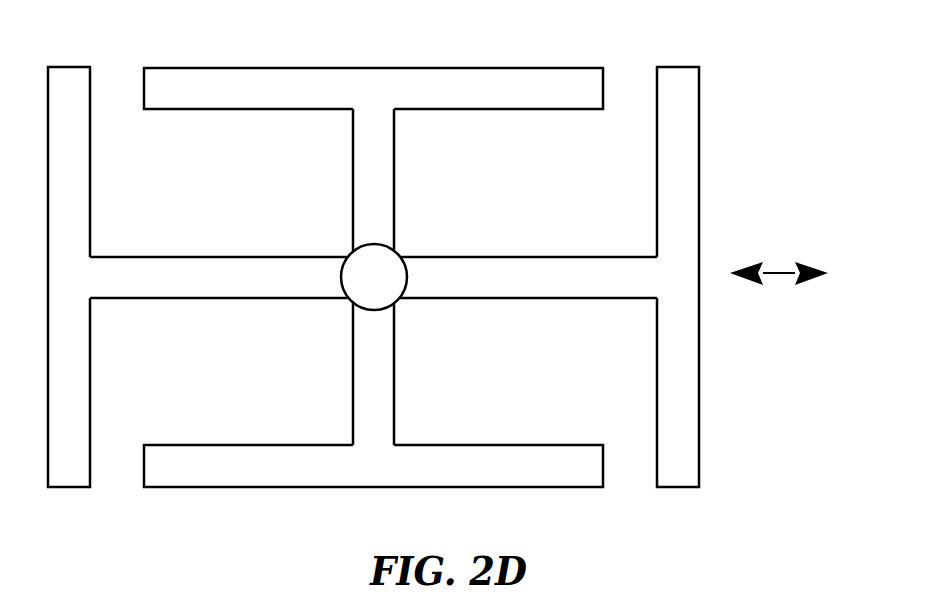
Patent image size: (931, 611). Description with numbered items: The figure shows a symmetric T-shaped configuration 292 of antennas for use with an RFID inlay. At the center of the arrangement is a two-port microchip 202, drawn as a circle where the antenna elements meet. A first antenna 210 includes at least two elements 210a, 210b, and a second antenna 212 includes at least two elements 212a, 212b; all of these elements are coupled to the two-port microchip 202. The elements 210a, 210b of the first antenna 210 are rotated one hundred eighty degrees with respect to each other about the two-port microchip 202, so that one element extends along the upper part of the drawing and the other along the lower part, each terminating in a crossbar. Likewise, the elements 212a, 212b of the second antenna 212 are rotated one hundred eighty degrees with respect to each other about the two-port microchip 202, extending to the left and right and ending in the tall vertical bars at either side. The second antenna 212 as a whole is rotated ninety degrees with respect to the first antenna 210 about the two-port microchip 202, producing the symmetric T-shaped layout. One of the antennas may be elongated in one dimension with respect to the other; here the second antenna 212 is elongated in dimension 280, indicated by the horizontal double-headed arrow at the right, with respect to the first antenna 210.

The symmetric T-shaped configuration 292 is at (146, 28).
The two-port microchip 202 is at (362, 285).
The first antenna 210 is at (236, 503).
The element of first antenna 210a is at (255, 455).
The element of first antenna 210b is at (253, 92).
The second antenna 212 is at (571, 312).
The element of second antenna 212a is at (77, 205).
The element of second antenna 212b is at (663, 194).
The dimension 280 is at (782, 276).